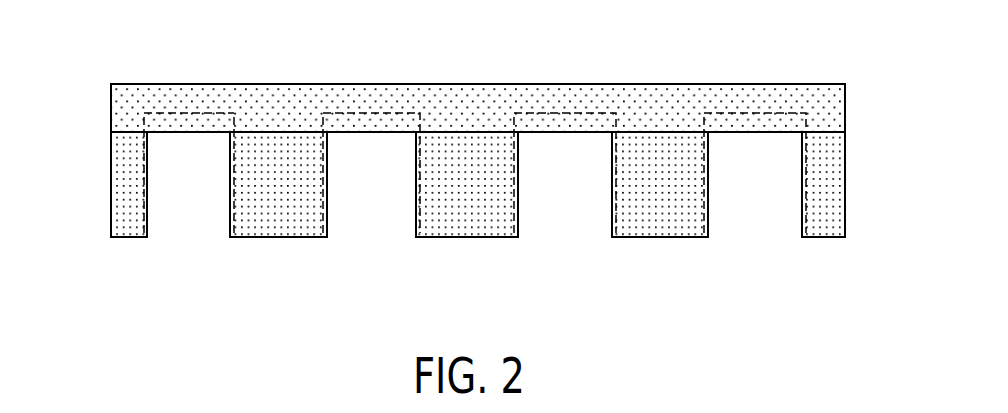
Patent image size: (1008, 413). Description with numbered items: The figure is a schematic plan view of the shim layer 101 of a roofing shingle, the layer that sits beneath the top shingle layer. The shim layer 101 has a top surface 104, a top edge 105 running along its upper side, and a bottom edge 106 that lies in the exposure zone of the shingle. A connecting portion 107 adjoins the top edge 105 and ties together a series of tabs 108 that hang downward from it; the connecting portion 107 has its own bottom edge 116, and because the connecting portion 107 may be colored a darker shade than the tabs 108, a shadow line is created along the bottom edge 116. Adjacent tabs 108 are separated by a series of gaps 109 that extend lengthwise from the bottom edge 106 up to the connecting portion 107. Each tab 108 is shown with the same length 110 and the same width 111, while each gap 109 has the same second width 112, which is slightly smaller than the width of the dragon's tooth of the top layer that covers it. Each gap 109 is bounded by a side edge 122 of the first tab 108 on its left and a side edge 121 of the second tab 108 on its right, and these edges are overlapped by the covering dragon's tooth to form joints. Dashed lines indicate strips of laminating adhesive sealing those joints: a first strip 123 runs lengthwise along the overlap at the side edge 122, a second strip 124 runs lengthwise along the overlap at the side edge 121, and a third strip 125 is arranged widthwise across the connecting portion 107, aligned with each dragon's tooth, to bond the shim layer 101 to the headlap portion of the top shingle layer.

The shim layer 101 is at (562, 63).
The top surface 104 is at (455, 219).
The top edge 105 is at (498, 84).
The bottom edge 106 is at (624, 237).
The connecting portion 107 is at (833, 113).
The tabs 108 is at (833, 228).
The gaps 109 is at (360, 231).
The length 110 is at (641, 132).
The width 111 is at (612, 169).
The second width 112 is at (147, 203).
The bottom edge 116 is at (463, 132).
The side edge 121 is at (110, 209).
The side edge 122 is at (322, 150).
The first strip of laminating adhesive 123 is at (140, 155).
The second strip of laminating adhesive 124 is at (237, 173).
The third strip of laminating adhesive 125 is at (192, 112).